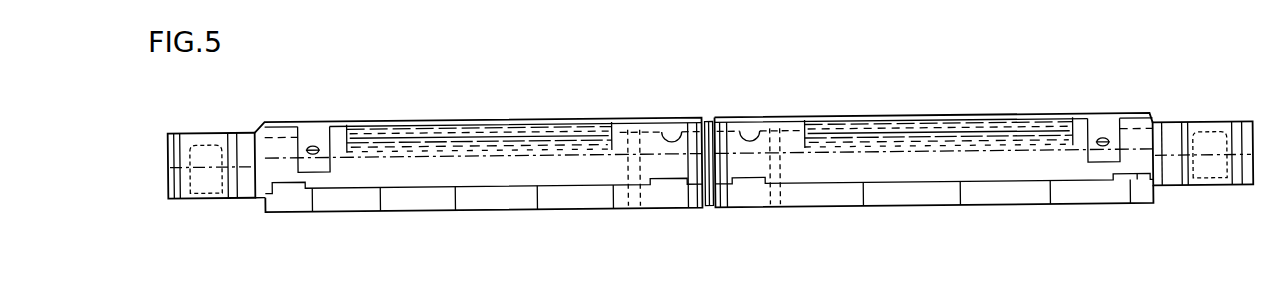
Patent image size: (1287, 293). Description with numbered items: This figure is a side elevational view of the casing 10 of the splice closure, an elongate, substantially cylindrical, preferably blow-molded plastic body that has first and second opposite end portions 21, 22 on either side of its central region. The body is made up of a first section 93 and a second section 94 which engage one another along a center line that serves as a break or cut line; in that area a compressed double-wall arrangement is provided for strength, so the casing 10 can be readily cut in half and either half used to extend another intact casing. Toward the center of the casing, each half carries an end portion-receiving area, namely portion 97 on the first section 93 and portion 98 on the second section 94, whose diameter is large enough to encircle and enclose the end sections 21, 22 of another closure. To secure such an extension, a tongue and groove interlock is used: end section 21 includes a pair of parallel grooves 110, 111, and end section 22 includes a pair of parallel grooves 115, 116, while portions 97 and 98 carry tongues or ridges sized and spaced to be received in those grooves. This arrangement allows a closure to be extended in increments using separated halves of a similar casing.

The casing 10 is at (549, 219).
The first end portion 21 is at (211, 128).
The second end portion 22 is at (1209, 122).
The first section 93 is at (432, 120).
The second section 94 is at (928, 115).
The end portion-receiving portion 97 is at (677, 119).
The end portion-receiving portion 98 is at (757, 119).
The groove 110 is at (180, 182).
The groove 111 is at (236, 182).
The groove 115 is at (1184, 187).
The groove 116 is at (1237, 187).